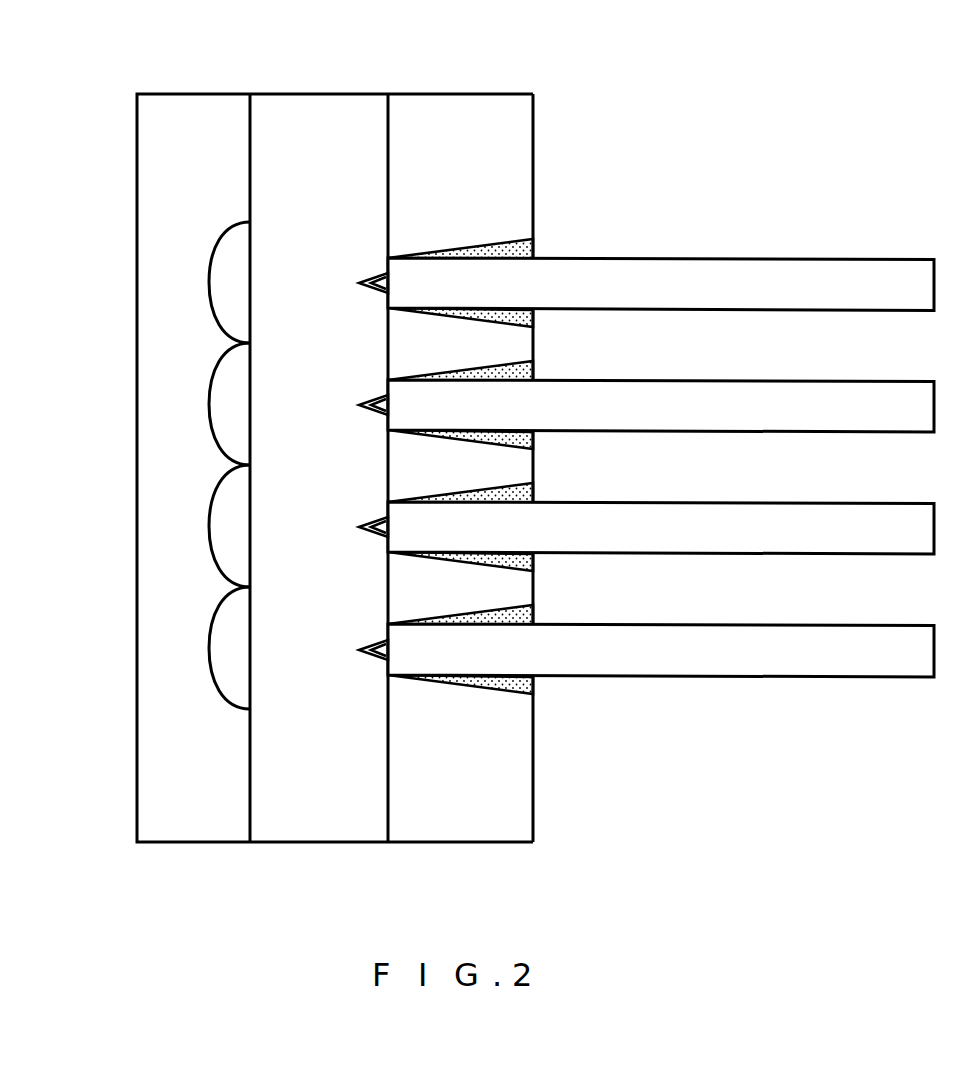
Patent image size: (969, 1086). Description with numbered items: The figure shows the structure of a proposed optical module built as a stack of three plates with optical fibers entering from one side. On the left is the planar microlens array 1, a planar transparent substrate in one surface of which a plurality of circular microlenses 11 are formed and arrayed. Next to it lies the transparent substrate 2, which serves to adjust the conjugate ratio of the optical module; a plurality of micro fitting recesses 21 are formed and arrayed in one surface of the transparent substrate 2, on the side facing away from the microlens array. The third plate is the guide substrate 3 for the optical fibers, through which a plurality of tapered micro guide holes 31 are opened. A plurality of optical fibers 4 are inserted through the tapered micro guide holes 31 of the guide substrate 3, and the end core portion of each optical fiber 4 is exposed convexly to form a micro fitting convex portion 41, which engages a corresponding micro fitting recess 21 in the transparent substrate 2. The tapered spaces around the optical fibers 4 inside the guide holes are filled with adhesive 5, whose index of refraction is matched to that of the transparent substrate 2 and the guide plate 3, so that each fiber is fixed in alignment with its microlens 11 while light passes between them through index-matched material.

The planar microlens array 1 is at (186, 106).
The circular microlens 11 is at (223, 285).
The transparent substrate 2 is at (318, 106).
The micro fitting recess 21 is at (386, 281).
The guide substrate 3 is at (462, 106).
The tapered micro guide hole 31 is at (482, 250).
The optical fiber 4 is at (832, 258).
The micro fitting convex portion 41 is at (390, 650).
The adhesive 5 is at (530, 248).